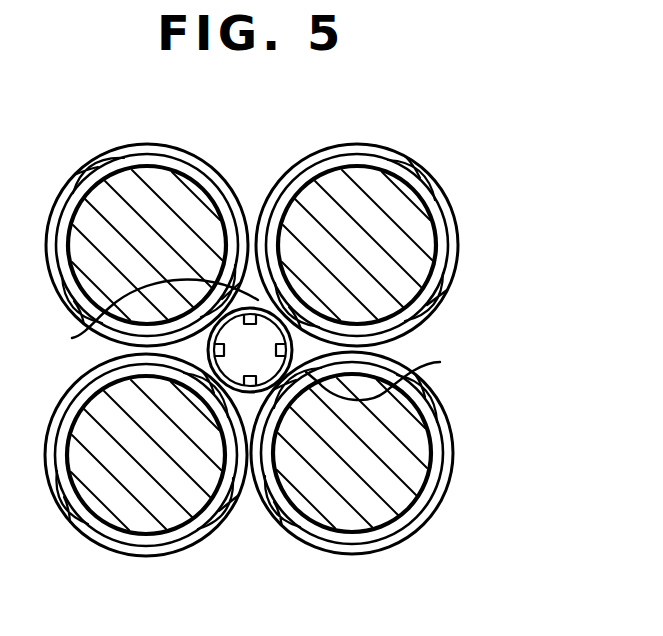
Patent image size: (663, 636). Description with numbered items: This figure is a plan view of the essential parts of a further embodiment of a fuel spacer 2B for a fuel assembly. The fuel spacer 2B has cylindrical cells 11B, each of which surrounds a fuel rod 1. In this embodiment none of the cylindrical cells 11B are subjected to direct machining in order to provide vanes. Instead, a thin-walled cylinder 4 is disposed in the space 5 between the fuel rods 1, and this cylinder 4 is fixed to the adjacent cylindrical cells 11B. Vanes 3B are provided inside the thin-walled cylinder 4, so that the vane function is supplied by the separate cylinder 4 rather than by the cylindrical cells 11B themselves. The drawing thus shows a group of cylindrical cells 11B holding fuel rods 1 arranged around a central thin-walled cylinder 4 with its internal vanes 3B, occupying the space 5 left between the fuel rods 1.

The fuel rod 1 is at (398, 277).
The fuel spacer 2B is at (403, 213).
The vane 3B is at (222, 379).
The cylinder 4 is at (382, 375).
The space 5 is at (152, 320).
The cylindrical cell 11B is at (462, 246).